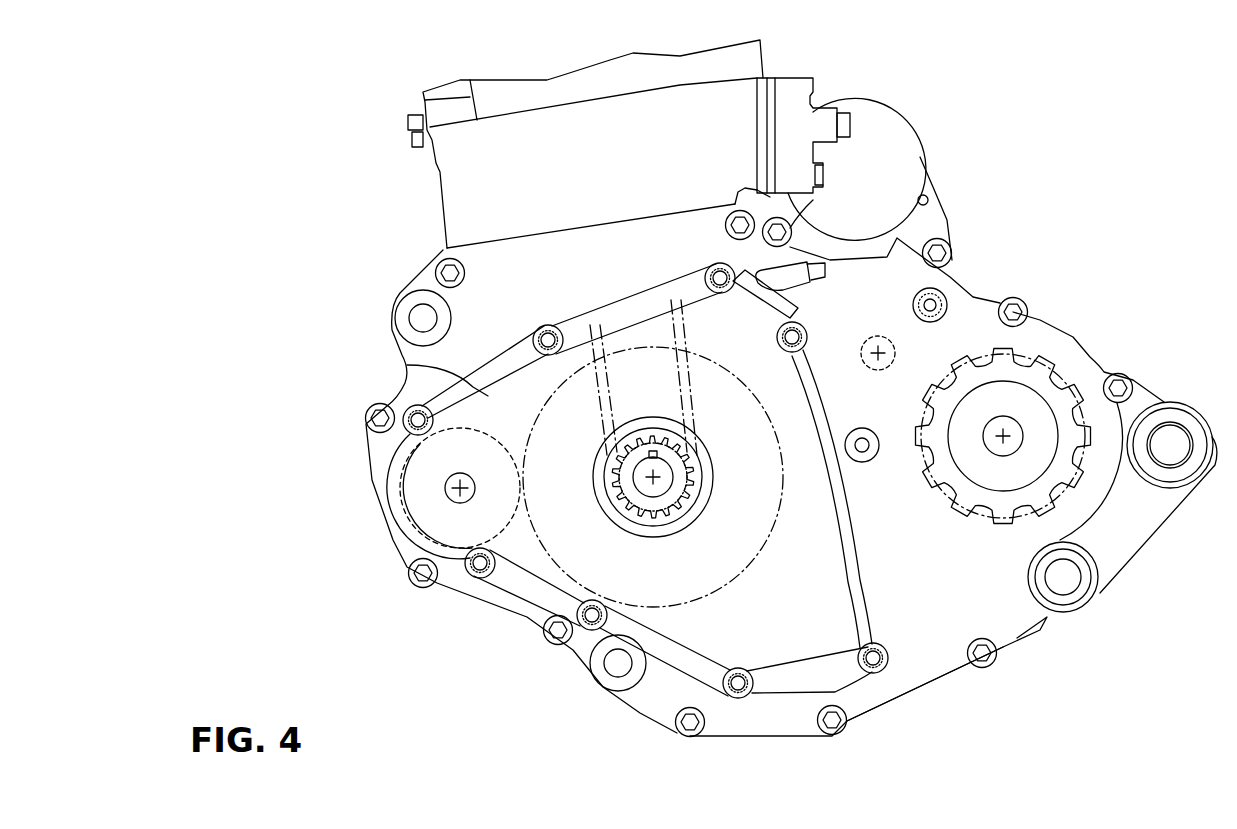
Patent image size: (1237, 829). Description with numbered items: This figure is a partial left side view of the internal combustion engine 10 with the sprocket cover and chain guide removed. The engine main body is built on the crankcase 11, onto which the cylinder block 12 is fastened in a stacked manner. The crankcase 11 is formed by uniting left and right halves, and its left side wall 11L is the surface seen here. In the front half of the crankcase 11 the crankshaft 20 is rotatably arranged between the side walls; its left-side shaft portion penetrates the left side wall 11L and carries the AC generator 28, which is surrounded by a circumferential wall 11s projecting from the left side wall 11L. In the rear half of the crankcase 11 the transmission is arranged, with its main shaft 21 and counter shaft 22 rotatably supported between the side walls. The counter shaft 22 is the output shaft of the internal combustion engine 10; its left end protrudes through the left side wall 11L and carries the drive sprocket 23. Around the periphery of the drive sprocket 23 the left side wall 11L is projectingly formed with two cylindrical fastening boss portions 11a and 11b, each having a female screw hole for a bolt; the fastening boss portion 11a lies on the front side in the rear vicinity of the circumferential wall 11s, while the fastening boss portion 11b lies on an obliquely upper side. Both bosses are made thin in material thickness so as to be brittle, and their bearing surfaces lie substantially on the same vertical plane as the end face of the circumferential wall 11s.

The internal combustion engine 10 is at (385, 297).
The crankcase 11 is at (743, 736).
The left side wall 11L is at (923, 627).
The circumferential wall 11s is at (400, 367).
The fastening boss portion 11a is at (862, 428).
The fastening boss portion 11b is at (914, 297).
The cylinder block 12 is at (435, 178).
The crankshaft 20 is at (663, 497).
The main shaft 21 is at (863, 337).
The counter shaft 22 is at (1020, 423).
The drive sprocket 23 is at (1060, 375).
The AC generator 28 is at (727, 583).